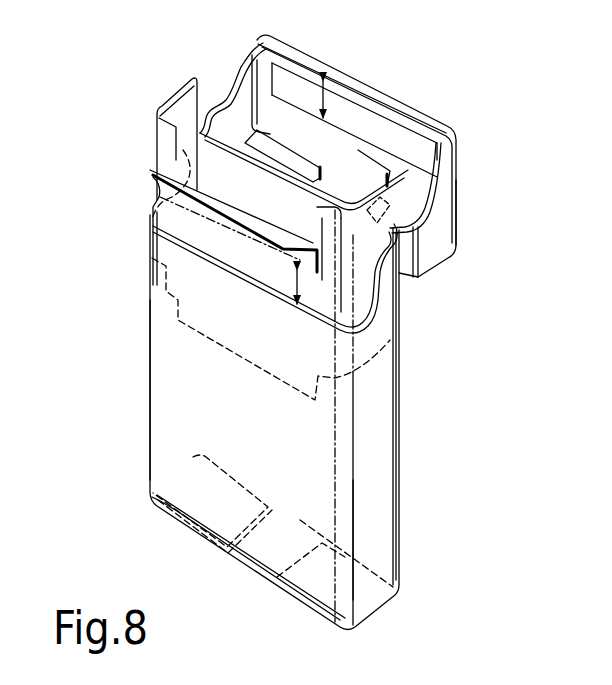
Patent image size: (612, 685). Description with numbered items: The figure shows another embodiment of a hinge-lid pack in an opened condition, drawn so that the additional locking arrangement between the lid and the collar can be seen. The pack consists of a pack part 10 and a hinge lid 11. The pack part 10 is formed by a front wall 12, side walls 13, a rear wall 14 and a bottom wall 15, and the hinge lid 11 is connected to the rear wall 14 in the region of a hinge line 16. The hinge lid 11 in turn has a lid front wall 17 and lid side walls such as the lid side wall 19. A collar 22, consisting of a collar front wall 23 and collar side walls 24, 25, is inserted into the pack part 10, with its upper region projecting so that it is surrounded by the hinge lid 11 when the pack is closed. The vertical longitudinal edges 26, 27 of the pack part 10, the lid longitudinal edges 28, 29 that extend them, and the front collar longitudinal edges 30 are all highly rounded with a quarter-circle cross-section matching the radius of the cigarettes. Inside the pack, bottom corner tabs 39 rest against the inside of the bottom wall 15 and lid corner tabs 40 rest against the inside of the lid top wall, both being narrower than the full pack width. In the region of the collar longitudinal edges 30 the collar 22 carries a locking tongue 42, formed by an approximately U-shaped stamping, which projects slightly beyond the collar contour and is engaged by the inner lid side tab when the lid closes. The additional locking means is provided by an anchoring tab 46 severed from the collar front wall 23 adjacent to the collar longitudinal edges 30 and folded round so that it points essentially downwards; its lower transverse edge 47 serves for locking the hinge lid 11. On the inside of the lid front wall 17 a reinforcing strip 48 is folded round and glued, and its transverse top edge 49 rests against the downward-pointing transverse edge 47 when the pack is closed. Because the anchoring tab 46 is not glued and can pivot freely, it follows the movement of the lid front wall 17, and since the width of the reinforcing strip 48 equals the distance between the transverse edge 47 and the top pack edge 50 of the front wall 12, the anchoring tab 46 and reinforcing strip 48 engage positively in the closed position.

The pack part 10 is at (154, 520).
The hinge lid 11 is at (459, 128).
The front wall 12 is at (260, 444).
The side walls 13 is at (372, 462).
The rear wall 14 is at (400, 387).
The bottom wall 15 is at (250, 553).
The hinge line 16 is at (259, 152).
The lid front wall 17 is at (405, 180).
The lid side wall 19 is at (435, 237).
The collar 22 is at (140, 150).
The collar front wall 23 is at (250, 252).
The collar side wall 24 is at (178, 108).
The collar side wall 25 is at (345, 282).
The vertical longitudinal edge 26 is at (150, 340).
The vertical longitudinal edge 27 is at (207, 127).
The lid longitudinal edge 28 is at (458, 175).
The lid longitudinal edge 29 is at (407, 260).
The front collar longitudinal edge 30 is at (155, 134).
The bottom corner tab 39 is at (205, 533).
The lid corner tab 40 is at (324, 80).
The locking tongue 42 is at (360, 338).
The anchoring tab 46 is at (152, 177).
The lower transverse edge 47 is at (222, 238).
The reinforcing strip 48 is at (227, 92).
The top edge 49 is at (347, 130).
The top pack edge 50 is at (222, 278).